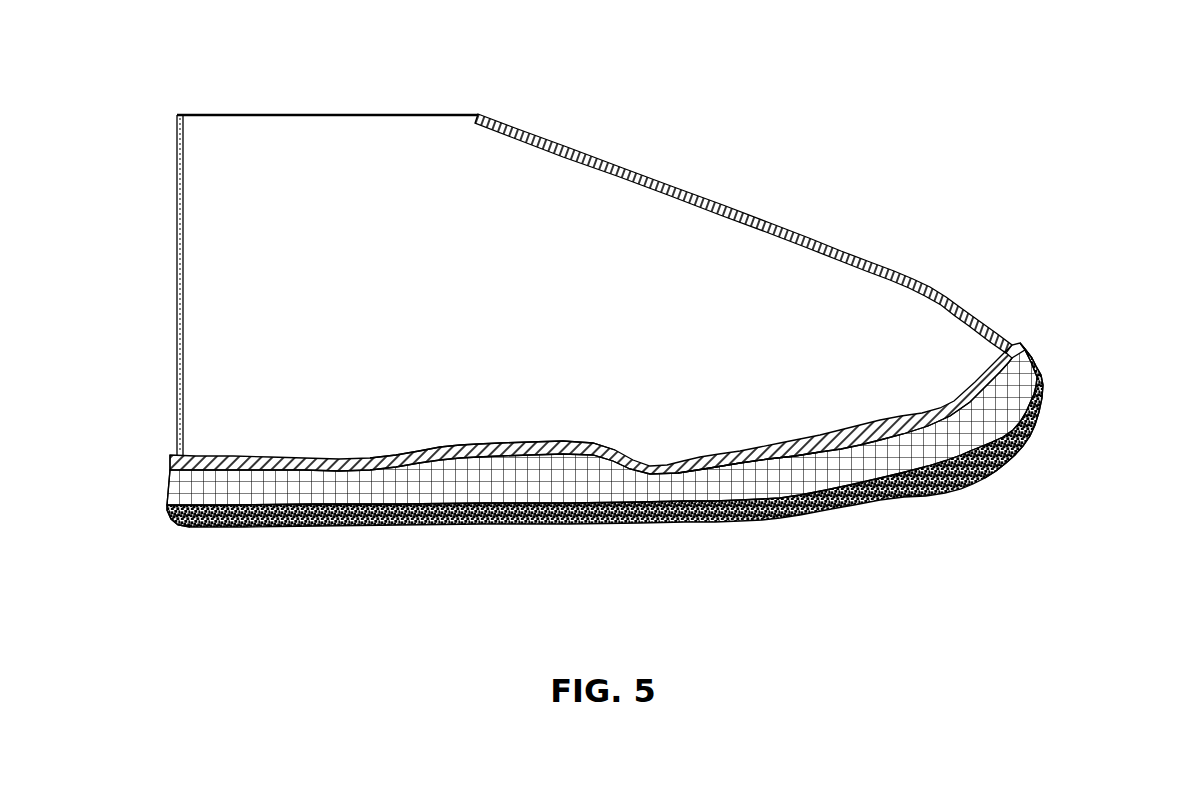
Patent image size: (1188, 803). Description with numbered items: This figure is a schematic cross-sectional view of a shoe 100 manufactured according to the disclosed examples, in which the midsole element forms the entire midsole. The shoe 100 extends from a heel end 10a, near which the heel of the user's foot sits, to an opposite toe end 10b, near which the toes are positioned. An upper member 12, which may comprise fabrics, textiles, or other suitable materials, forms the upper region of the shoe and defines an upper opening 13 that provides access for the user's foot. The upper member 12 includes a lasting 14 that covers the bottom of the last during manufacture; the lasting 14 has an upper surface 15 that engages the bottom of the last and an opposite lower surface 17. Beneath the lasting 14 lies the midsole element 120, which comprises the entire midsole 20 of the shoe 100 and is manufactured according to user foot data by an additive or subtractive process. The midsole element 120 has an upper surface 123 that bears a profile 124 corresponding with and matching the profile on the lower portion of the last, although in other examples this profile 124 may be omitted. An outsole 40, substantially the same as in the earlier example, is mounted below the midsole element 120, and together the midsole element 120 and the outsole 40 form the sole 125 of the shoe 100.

The shoe 100 is at (820, 77).
The upper opening 13 is at (284, 111).
The upper member 12 is at (573, 143).
The upper surface 15 is at (676, 455).
The lasting 14 is at (883, 425).
The profile 124 is at (397, 458).
The upper surface 123 is at (533, 443).
The lower surface 17 is at (745, 465).
The midsole element 120 is at (374, 490).
The outsole 40 is at (1013, 455).
The sole 125 is at (204, 536).
The midsole 20 is at (1020, 348).
The toe end 10b is at (1060, 360).
The heel end 10a is at (147, 473).